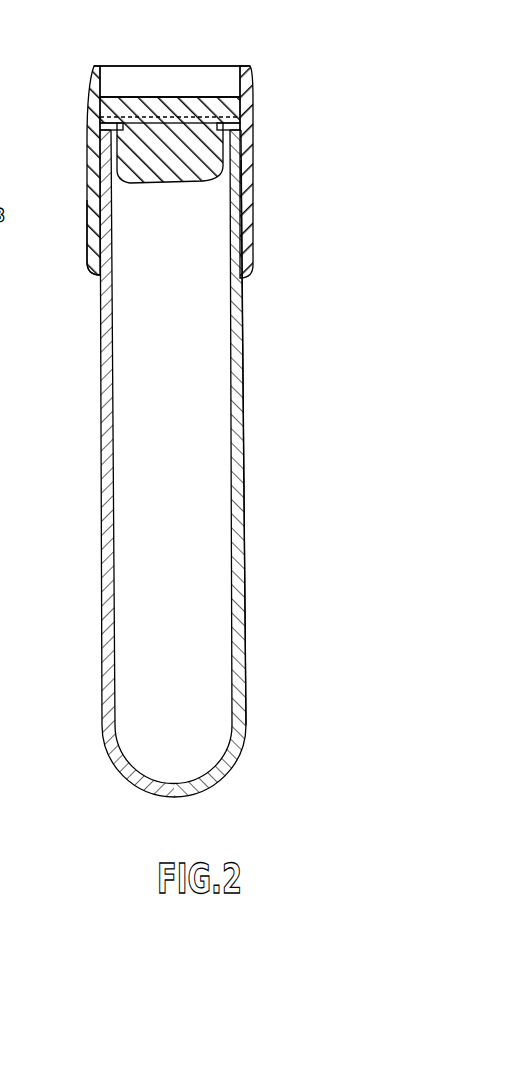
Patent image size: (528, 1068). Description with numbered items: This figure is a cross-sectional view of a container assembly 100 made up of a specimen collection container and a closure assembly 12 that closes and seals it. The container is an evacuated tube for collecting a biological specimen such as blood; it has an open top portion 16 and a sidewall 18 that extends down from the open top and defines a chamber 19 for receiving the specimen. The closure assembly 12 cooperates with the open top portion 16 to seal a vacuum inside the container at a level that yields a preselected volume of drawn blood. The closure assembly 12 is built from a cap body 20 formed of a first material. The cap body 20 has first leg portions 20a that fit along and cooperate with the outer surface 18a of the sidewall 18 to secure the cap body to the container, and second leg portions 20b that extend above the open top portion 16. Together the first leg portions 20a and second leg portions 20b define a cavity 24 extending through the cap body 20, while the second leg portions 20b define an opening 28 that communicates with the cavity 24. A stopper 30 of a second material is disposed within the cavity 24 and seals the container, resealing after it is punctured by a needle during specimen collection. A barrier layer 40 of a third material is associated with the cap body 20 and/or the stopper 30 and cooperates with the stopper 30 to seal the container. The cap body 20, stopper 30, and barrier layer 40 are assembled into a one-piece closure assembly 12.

The container assembly 100 is at (348, 178).
The closure assembly 12 is at (70, 112).
The open top portion 16 is at (229, 146).
The sidewall 18 is at (244, 420).
The outer surface 18a is at (241, 286).
The chamber 19 is at (179, 430).
The cap body 20 is at (94, 178).
The first leg portions 20a is at (95, 238).
The second leg portions 20b is at (94, 80).
The cavity 24 is at (192, 80).
The opening 28 is at (158, 90).
The stopper 30 is at (210, 168).
The barrier layer 40 is at (192, 108).